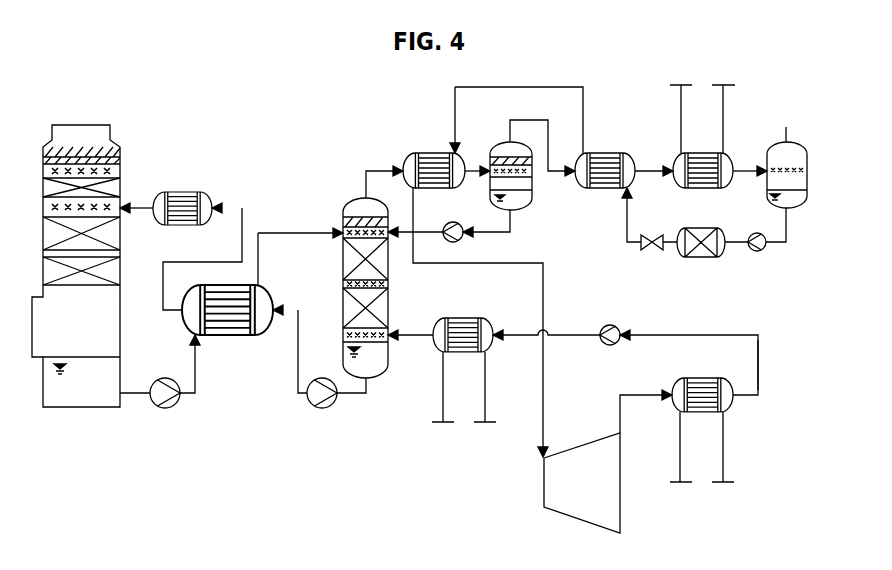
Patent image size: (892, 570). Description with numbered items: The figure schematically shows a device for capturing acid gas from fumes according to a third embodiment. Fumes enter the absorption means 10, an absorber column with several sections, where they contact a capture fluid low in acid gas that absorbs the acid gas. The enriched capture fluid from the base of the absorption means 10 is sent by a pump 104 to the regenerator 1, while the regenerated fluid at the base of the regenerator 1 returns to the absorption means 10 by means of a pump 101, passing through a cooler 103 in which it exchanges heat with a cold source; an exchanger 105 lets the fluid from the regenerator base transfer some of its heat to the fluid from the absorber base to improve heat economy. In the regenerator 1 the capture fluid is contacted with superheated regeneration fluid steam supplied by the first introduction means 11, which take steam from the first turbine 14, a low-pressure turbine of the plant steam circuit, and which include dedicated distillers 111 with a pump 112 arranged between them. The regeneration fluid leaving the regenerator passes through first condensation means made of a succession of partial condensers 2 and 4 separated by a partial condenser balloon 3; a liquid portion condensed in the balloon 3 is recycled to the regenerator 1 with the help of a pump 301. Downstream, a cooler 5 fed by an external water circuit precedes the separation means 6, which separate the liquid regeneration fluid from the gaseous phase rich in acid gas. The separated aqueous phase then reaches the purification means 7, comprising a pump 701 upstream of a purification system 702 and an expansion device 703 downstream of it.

The regenerator 1 is at (398, 356).
The partial condenser 2 is at (428, 145).
The partial condenser balloon 3 is at (496, 136).
The partial condenser 4 is at (606, 145).
The cooler 5 is at (693, 145).
The separation means 6 is at (767, 140).
The purification means 7 is at (686, 262).
The absorption means 10 is at (127, 296).
The first introduction means 11 is at (758, 360).
The first turbine 14 is at (628, 483).
The pump 101 is at (320, 370).
The cooler 103 is at (183, 184).
The pump 104 is at (163, 370).
The exchanger 105 is at (228, 345).
The distiller 111 is at (462, 311).
The pump 112 is at (609, 317).
The pump 301 is at (468, 241).
The pump 701 is at (758, 257).
The purification system 702 is at (705, 262).
The expansion device 703 is at (644, 257).